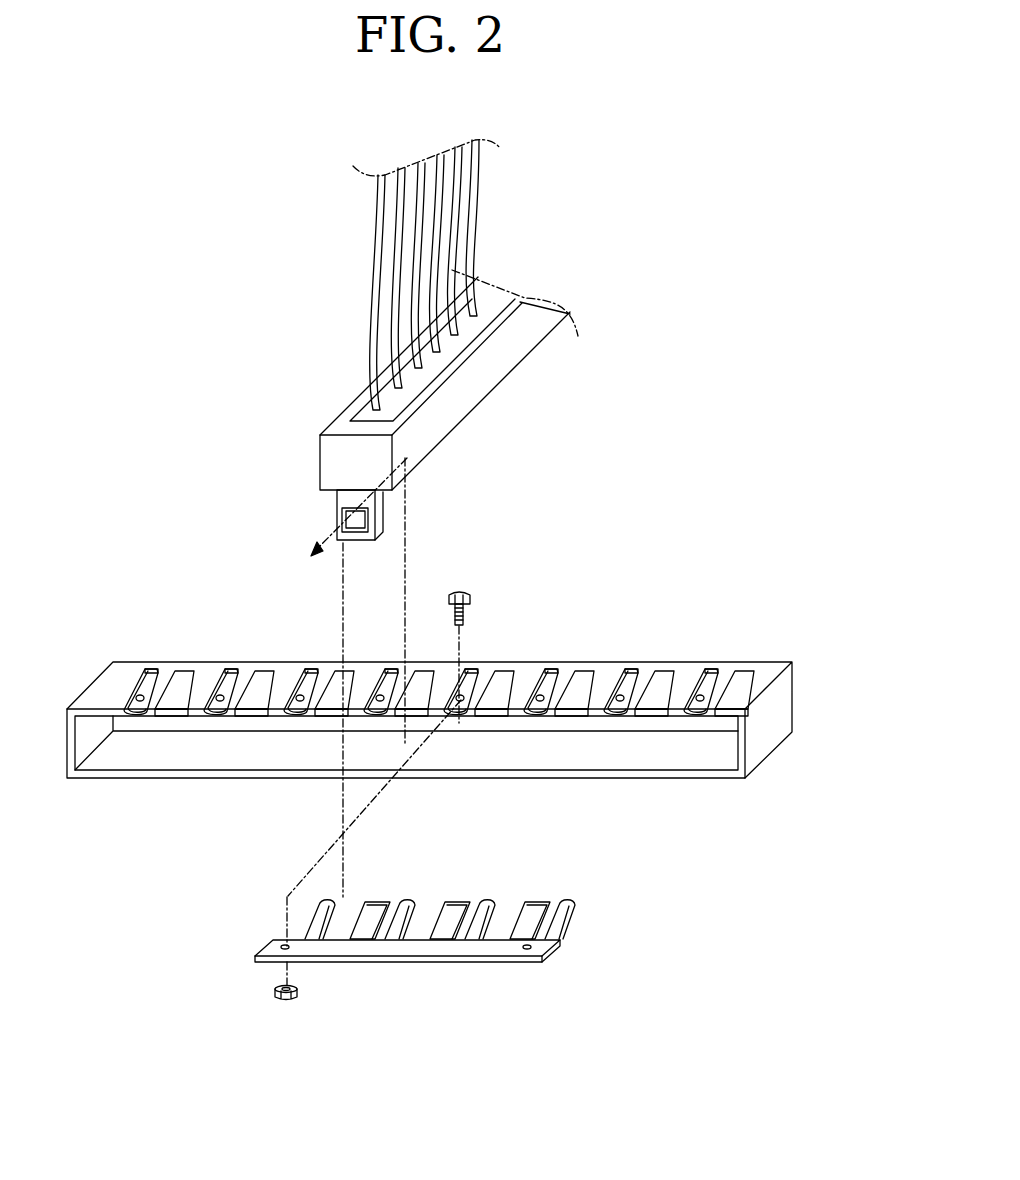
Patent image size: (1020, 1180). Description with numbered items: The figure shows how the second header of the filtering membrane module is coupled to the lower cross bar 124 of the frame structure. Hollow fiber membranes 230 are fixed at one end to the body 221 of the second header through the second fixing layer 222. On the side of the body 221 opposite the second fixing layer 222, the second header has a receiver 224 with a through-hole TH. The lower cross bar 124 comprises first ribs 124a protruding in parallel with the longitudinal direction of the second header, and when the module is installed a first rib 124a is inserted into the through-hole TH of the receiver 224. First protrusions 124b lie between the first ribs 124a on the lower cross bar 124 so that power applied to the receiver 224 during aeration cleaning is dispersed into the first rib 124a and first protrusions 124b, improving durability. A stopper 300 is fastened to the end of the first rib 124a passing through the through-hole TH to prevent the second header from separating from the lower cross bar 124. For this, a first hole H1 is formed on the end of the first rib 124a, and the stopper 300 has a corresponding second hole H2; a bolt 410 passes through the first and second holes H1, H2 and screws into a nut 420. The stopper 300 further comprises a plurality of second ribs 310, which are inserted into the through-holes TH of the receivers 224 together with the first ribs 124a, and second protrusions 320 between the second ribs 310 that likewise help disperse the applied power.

The lower cross bar 124 is at (84, 666).
The first rib 124a is at (226, 682).
The first protrusion 124b is at (274, 690).
The first hole H1 is at (472, 700).
The body 221 is at (472, 383).
The second fixing layer 222 is at (362, 413).
The receiver 224 is at (340, 500).
The through-hole TH is at (372, 518).
The hollow fiber membrane 230 is at (374, 265).
The stopper 300 is at (592, 922).
The second rib 310 is at (404, 908).
The second protrusion 320 is at (446, 910).
The bolt 410 is at (469, 595).
The nut 420 is at (300, 993).
The second hole H2 is at (279, 943).